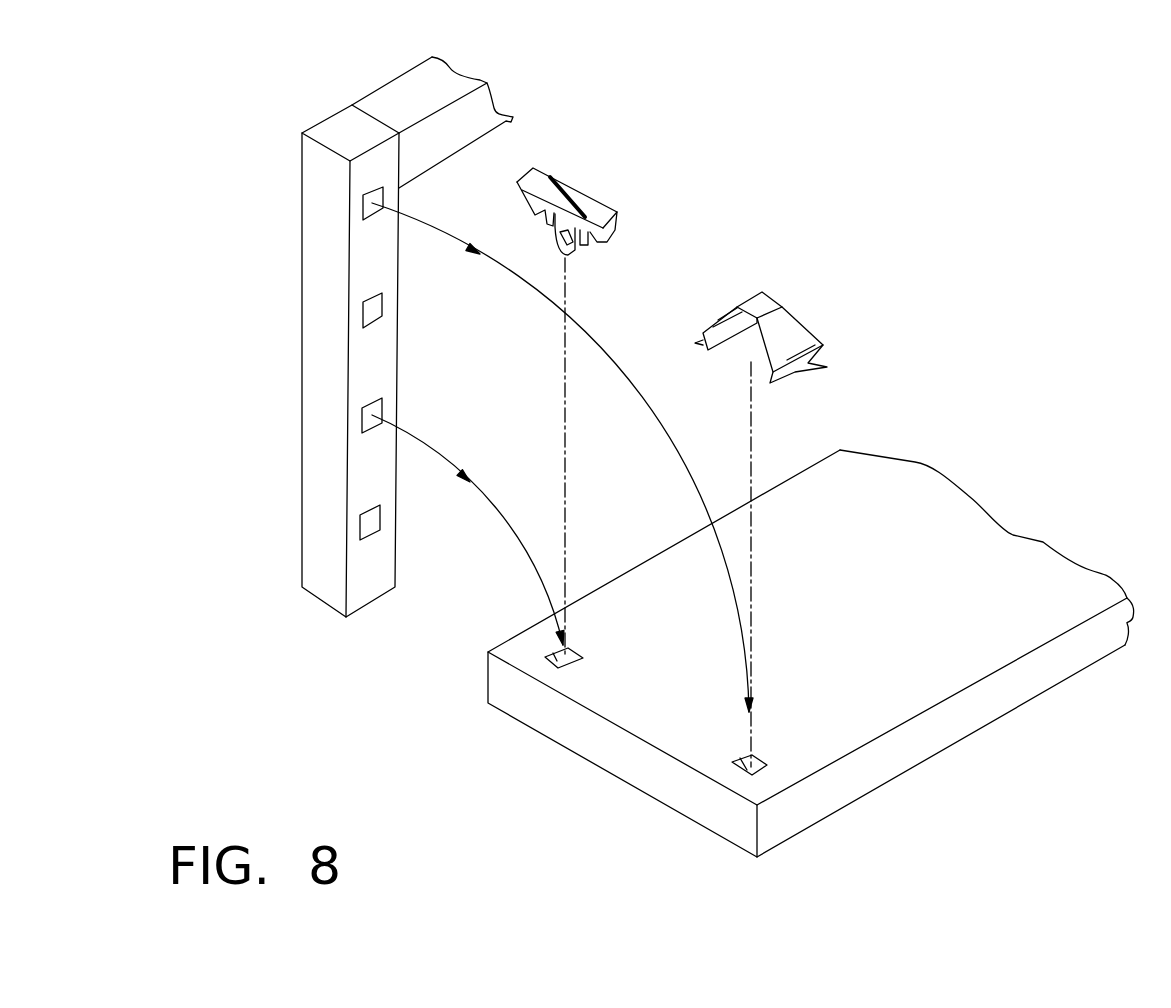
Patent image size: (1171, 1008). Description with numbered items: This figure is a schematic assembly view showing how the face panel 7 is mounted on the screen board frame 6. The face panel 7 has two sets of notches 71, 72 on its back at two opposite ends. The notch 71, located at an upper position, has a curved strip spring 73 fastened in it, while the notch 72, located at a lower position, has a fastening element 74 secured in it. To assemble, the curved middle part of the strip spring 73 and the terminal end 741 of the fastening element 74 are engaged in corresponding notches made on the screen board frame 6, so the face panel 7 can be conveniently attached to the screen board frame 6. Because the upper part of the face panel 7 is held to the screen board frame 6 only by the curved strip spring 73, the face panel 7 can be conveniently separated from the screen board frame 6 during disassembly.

The screen board frame 6 is at (305, 385).
The face panel 7 is at (970, 513).
The notch 71 is at (717, 777).
The notch 72 is at (552, 656).
The curved strip spring 73 is at (765, 297).
The fastening element 74 is at (597, 210).
The terminal end 741 is at (540, 178).